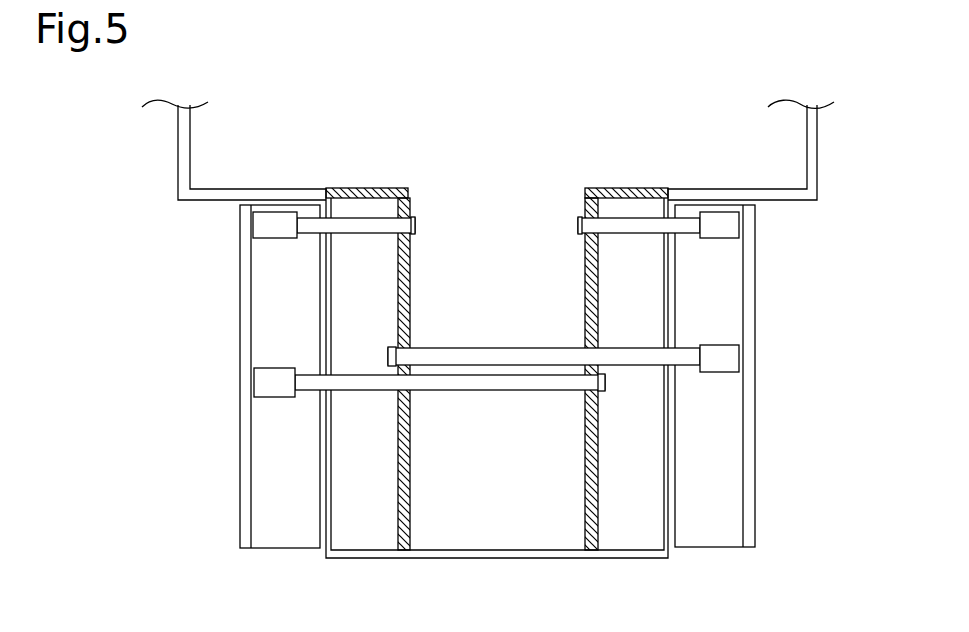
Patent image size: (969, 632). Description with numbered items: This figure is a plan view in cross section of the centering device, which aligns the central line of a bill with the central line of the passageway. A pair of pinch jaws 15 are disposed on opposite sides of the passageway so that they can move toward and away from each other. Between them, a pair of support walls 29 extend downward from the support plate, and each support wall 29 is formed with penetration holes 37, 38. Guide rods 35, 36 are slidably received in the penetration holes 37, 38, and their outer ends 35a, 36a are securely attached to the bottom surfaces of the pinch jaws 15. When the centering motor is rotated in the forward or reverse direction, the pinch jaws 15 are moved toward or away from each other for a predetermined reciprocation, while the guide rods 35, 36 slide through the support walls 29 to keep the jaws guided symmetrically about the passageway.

The pinch jaw 15 is at (240, 476).
The support wall 29 is at (411, 496).
The guide rod 35 is at (545, 348).
The outer end of guide rod 35a is at (296, 396).
The guide rod 36 is at (415, 219).
The outer end of guide rod 36a is at (297, 236).
The penetration hole 37 is at (416, 350).
The penetration hole 38 is at (413, 234).